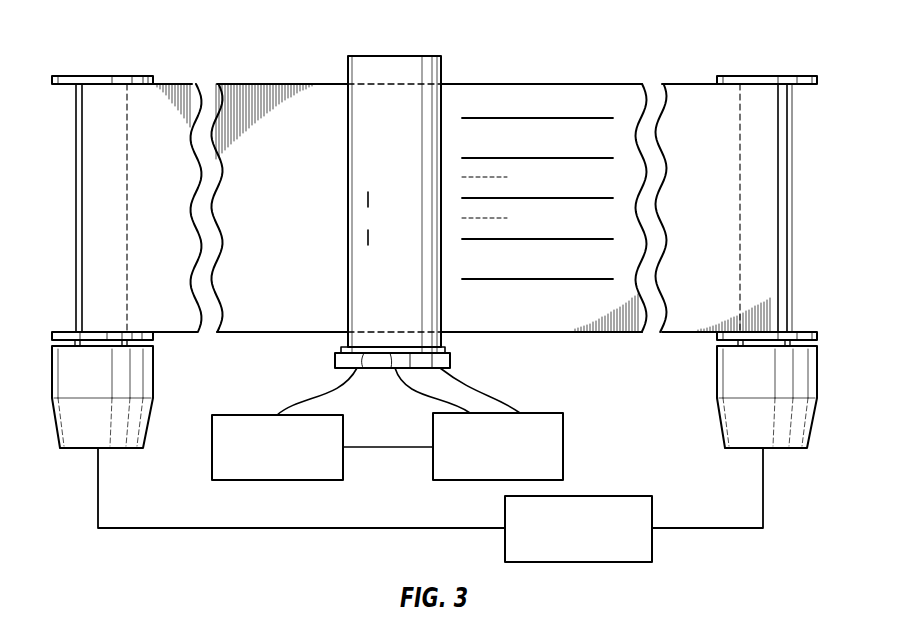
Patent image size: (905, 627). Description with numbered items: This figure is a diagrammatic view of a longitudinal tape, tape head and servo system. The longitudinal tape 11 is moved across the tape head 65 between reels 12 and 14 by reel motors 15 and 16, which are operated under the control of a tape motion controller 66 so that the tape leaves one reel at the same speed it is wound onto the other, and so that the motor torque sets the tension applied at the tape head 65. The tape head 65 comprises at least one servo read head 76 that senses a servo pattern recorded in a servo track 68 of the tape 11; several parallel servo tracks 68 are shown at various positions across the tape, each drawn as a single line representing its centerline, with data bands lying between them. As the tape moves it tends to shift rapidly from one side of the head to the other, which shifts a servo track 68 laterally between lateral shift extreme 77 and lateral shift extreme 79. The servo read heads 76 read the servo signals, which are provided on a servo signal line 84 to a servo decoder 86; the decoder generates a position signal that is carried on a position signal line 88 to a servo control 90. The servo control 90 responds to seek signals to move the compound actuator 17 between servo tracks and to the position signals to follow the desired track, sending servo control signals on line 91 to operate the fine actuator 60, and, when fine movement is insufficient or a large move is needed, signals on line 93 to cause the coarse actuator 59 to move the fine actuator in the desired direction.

The longitudinal tape 11 is at (263, 82).
The reel 12 is at (85, 75).
The reel 14 is at (758, 75).
The reel motor 15 is at (87, 448).
The reel motor 16 is at (778, 448).
The compound actuator 17 is at (381, 371).
The coarse actuator 59 is at (450, 362).
The fine actuator 60 is at (446, 350).
The tape head 65 is at (343, 338).
The tape motion controller 66 is at (652, 542).
The servo track 68 is at (537, 117).
The servo read head 76 is at (362, 197).
The lateral shift extreme 77 is at (507, 178).
The lateral shift extreme 79 is at (507, 219).
The servo signal line 84 is at (303, 393).
The servo decoder 86 is at (212, 447).
The position signal line 88 is at (387, 452).
The servo control 90 is at (565, 448).
The line 91 is at (418, 397).
The line 93 is at (512, 402).